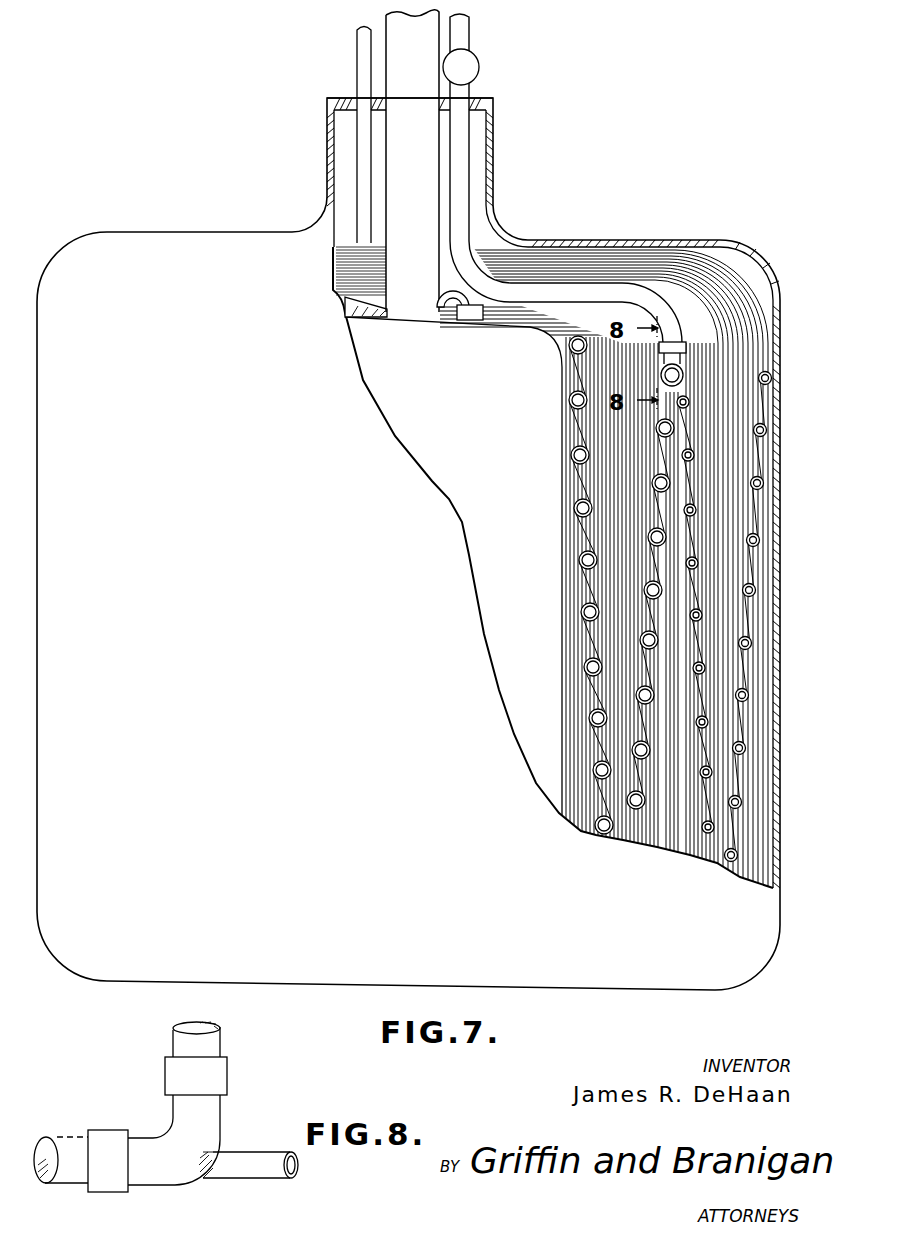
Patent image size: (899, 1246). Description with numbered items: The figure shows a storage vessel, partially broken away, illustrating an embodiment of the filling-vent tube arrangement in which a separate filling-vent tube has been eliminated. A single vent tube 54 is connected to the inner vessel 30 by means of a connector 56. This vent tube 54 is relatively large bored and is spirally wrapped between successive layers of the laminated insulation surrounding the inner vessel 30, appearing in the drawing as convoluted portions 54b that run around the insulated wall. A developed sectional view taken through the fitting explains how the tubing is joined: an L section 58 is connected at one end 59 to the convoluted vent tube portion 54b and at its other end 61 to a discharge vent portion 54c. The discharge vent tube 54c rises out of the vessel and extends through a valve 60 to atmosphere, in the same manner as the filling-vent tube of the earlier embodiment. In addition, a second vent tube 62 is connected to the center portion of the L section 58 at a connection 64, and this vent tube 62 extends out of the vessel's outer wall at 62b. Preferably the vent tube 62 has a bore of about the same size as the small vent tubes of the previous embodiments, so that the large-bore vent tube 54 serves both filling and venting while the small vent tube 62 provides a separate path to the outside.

In FIG. 7, the inner vessel 30 is at (604, 568).
In FIG. 7, the vent tube 54 is at (445, 283).
In FIG. 7, the convoluted vent tube portion 54b is at (568, 392).
In FIG. 8, the convoluted vent tube portion 54b is at (57, 1140).
In FIG. 7, the discharge vent portion 54c is at (517, 280).
In FIG. 8, the discharge vent portion 54c is at (180, 1040).
In FIG. 7, the connector 56 is at (472, 316).
In FIG. 7, the L section 58 is at (685, 366).
In FIG. 8, the L section 58 is at (205, 1135).
In FIG. 8, the end of L section 59 is at (110, 1134).
In FIG. 7, the valve 60 is at (478, 62).
In FIG. 8, the other end of L section 61 is at (218, 1074).
In FIG. 7, the vent tube 62 is at (764, 482).
In FIG. 8, the vent tube 62 is at (252, 1152).
In FIG. 7, the vent tube outer wall portion 62b is at (356, 96).
In FIG. 8, the connection point 64 is at (204, 1182).